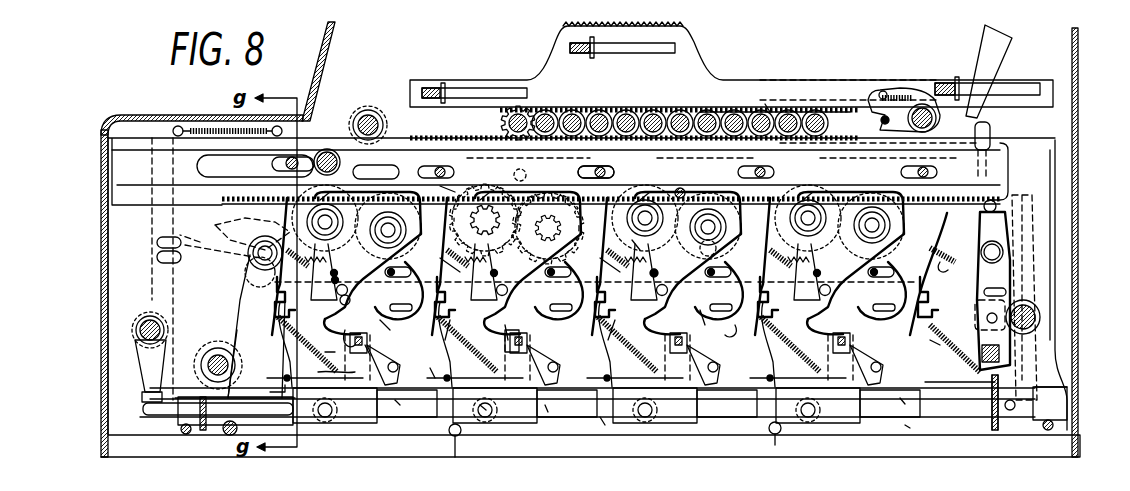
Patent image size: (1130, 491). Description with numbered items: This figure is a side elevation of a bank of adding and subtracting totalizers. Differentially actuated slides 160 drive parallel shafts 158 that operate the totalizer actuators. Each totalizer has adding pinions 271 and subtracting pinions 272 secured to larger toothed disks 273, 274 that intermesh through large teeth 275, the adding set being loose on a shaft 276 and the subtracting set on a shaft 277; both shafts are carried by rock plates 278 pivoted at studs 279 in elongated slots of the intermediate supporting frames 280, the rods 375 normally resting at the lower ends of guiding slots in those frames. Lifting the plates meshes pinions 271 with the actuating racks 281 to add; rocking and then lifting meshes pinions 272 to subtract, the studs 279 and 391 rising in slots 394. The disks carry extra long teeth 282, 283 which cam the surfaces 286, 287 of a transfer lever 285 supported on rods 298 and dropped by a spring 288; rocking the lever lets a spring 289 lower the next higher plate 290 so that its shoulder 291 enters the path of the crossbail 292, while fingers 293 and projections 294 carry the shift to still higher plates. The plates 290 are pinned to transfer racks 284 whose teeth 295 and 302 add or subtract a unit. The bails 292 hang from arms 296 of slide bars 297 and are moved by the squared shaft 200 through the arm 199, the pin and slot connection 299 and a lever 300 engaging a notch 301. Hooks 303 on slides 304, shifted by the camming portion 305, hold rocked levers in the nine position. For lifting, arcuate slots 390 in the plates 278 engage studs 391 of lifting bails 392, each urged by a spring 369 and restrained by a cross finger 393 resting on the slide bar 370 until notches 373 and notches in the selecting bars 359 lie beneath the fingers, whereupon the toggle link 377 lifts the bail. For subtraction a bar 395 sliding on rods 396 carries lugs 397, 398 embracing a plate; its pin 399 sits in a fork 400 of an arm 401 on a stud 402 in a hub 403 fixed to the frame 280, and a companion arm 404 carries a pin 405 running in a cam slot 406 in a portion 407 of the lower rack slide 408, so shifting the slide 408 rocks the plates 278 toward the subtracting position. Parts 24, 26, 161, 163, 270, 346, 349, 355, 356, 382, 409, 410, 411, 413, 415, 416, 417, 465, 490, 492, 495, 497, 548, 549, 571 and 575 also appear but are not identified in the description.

The base plate 24 is at (590, 297).
The housing wall 26 is at (1079, 110).
The parallel shaft 158 is at (600, 118).
The slide 160 is at (731, 66).
The toothed edge 161 is at (584, 4).
The gear roller 163 is at (655, 118).
The arm 199 is at (988, 316).
The squared shaft 200 is at (1010, 318).
The gear 270 is at (547, 235).
The adding pinion 271 is at (624, 240).
The subtracting pinion 272 is at (714, 252).
The large toothed disk 273 is at (617, 254).
The large toothed disk 274 is at (920, 218).
The large teeth 275 is at (489, 226).
The shaft 276 is at (641, 218).
The shaft 277 is at (717, 225).
The rock plate 278 is at (626, 322).
The pivot stud 279 is at (388, 215).
The intermediate supporting frame 280 is at (1083, 290).
The rack 281 is at (264, 194).
The long tooth 282 is at (457, 181).
The long tooth 283 is at (543, 179).
The transfer rack 284 is at (548, 278).
The transfer lever 285 is at (806, 171).
The surface 286 is at (388, 170).
The surface 287 is at (525, 172).
The spring 288 is at (955, 270).
The spring 289 is at (924, 338).
The plate 290 is at (597, 244).
The shoulder 291 is at (690, 315).
The crossbail 292 is at (734, 333).
The overturned finger 293 is at (619, 271).
The projection 294 is at (625, 322).
The teeth 295 is at (872, 236).
The arm 296 is at (644, 329).
The slide bar 297 is at (1013, 153).
The rod 298 is at (602, 154).
The pin and slot connection 299 is at (985, 296).
The lever 300 is at (985, 238).
The notch 301 is at (985, 226).
The teeth 302 is at (667, 266).
The hook 303 is at (815, 142).
The slide 304 is at (314, 120).
The camming portion 305 is at (343, 143).
The rack 346 is at (765, 104).
The bar 349 is at (766, 108).
The lever 355 is at (1040, 250).
The shaft 356 is at (1045, 325).
The selecting bar 359 is at (1083, 404).
The spring 369 is at (381, 345).
The slide bar 370 is at (1068, 384).
The notch 373 is at (924, 406).
The rod 375 is at (545, 335).
The toggle link 377 is at (696, 442).
The shaft 382 is at (205, 355).
The arcuate slot 390 is at (551, 362).
The stud 391 is at (664, 412).
The lifting bail 392 is at (591, 349).
The cross finger 393 is at (723, 363).
The slot 394 is at (659, 187).
The bar 395 is at (905, 428).
The rod 396 is at (628, 446).
The overturned lug 397 is at (668, 418).
The overturned lug 398 is at (716, 409).
The pin 399 is at (240, 412).
The fork 400 is at (252, 412).
The arm 401 is at (235, 361).
The stud 402 is at (250, 262).
The hub 403 is at (256, 326).
The arm 404 is at (232, 248).
The pin 405 is at (215, 225).
The cam slot 406 is at (157, 256).
The portion 407 is at (157, 229).
The lower rack slide 408 is at (1060, 164).
The wheel 409 is at (280, 216).
The pin 410 is at (326, 282).
The wheel 411 is at (375, 240).
The cam 413 is at (245, 280).
The stop 415 is at (280, 384).
The bar 416 is at (394, 408).
The hook 417 is at (591, 329).
The gear 465 is at (388, 118).
The bushing 490 is at (140, 336).
The arm 492 is at (152, 315).
The shaft 495 is at (140, 326).
The lever 497 is at (150, 371).
The lever 548 is at (989, 71).
The stop 549 is at (992, 126).
The pawl 571 is at (904, 110).
The roller 575 is at (923, 114).